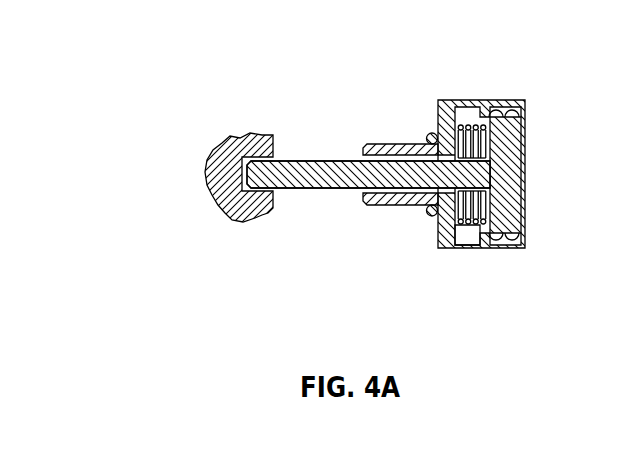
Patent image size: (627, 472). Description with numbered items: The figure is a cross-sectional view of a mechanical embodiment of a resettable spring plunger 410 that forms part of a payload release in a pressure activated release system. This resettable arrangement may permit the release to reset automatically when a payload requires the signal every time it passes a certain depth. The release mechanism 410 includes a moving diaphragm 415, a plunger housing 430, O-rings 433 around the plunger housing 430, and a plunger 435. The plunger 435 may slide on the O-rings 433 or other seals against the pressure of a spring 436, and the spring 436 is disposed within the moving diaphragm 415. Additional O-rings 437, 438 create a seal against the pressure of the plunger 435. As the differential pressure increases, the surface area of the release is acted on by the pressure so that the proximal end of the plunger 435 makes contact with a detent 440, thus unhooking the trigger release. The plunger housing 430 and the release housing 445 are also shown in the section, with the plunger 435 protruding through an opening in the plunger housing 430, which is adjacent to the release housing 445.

The resettable spring plunger 410 is at (424, 171).
The moving diaphragm 415 is at (473, 235).
The plunger housing 430 is at (415, 140).
The O-rings 433 is at (421, 211).
The plunger 435 is at (311, 157).
The spring 436 is at (466, 226).
The O-ring 437 is at (523, 112).
The O-ring 438 is at (498, 106).
The detent 440 is at (219, 132).
The release housing 445 is at (472, 98).